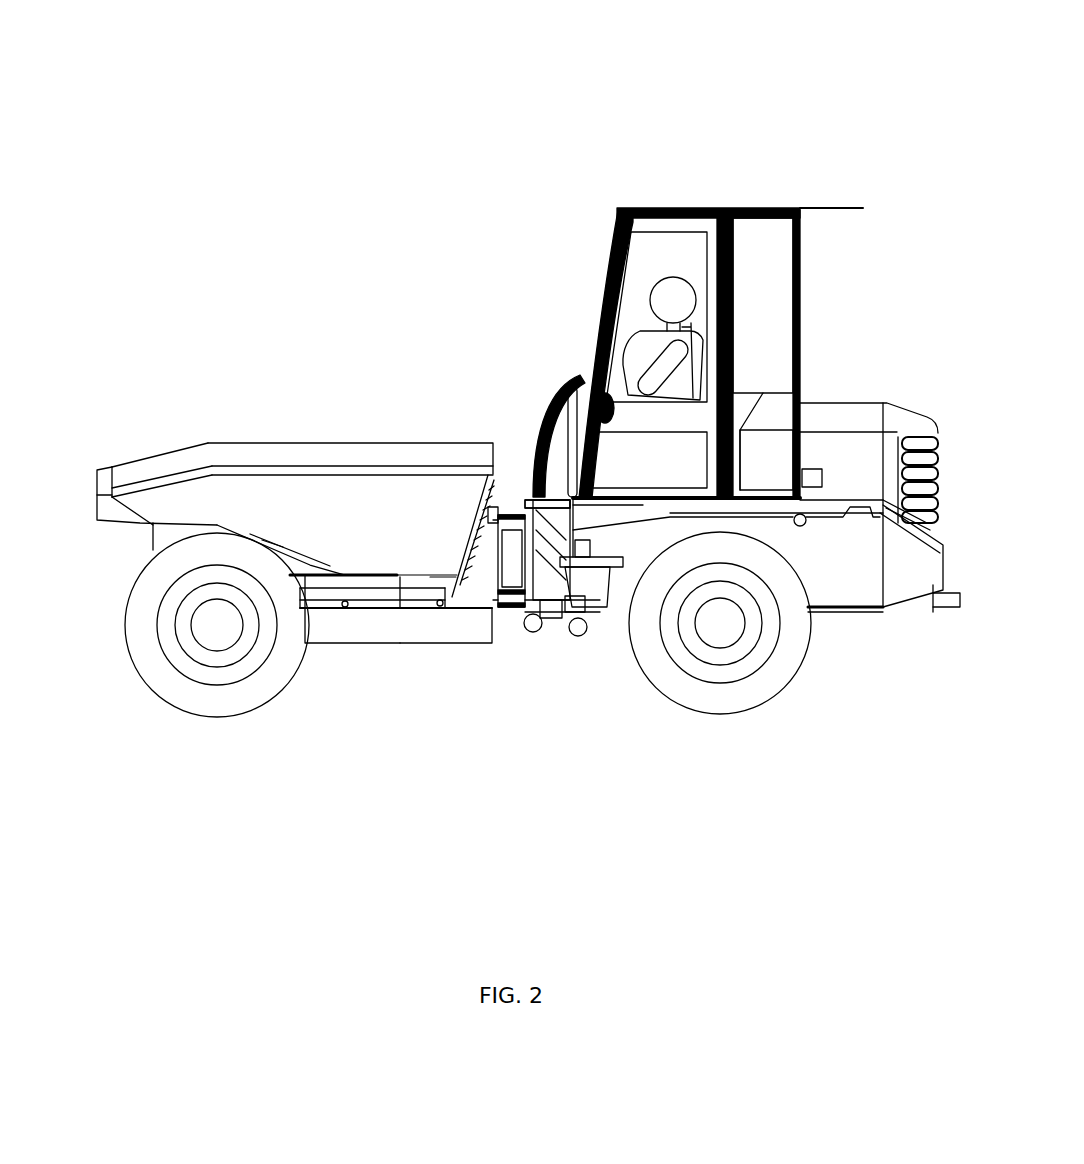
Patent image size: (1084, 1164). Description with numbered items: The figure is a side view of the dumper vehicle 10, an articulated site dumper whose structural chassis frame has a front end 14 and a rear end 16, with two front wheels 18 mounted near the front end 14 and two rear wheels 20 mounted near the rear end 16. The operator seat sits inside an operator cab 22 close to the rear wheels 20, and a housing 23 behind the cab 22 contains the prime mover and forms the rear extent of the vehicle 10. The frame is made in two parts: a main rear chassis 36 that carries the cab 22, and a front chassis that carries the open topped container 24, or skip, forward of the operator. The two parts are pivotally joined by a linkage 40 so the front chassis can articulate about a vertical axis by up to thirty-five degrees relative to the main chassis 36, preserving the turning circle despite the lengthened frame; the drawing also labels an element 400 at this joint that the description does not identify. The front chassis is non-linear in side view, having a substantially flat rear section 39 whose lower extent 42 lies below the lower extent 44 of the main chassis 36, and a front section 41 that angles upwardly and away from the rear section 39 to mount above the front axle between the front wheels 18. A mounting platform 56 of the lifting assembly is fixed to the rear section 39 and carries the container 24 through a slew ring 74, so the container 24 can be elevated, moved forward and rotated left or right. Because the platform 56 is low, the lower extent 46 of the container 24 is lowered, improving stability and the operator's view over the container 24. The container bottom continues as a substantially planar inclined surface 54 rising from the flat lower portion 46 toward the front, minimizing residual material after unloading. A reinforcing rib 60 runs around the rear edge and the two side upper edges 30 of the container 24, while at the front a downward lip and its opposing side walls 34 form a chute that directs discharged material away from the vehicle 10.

The dumper vehicle 10 is at (418, 119).
The front end 14 is at (140, 585).
The rear end 16 is at (922, 603).
The front wheels 18 is at (187, 703).
The rear wheels 20 is at (733, 707).
The operator cab 22 is at (677, 247).
The housing 23 is at (922, 470).
The open topped container 24 is at (413, 510).
The side upper edges 30 is at (248, 443).
The opposing side walls 34 is at (98, 480).
The main rear chassis 36 is at (847, 593).
The rear section 39 is at (453, 643).
The linkage 40 is at (498, 515).
The front section 41 is at (195, 605).
The lower extent 42 is at (397, 593).
The lower extent 44 is at (832, 606).
The lower extent 46 is at (352, 578).
The planar inclined surface 54 is at (283, 547).
The mounting platform 56 is at (407, 628).
The reinforcing rib 60 is at (382, 460).
The slew ring 74 is at (338, 577).
The lower articulation portion 400 is at (510, 607).